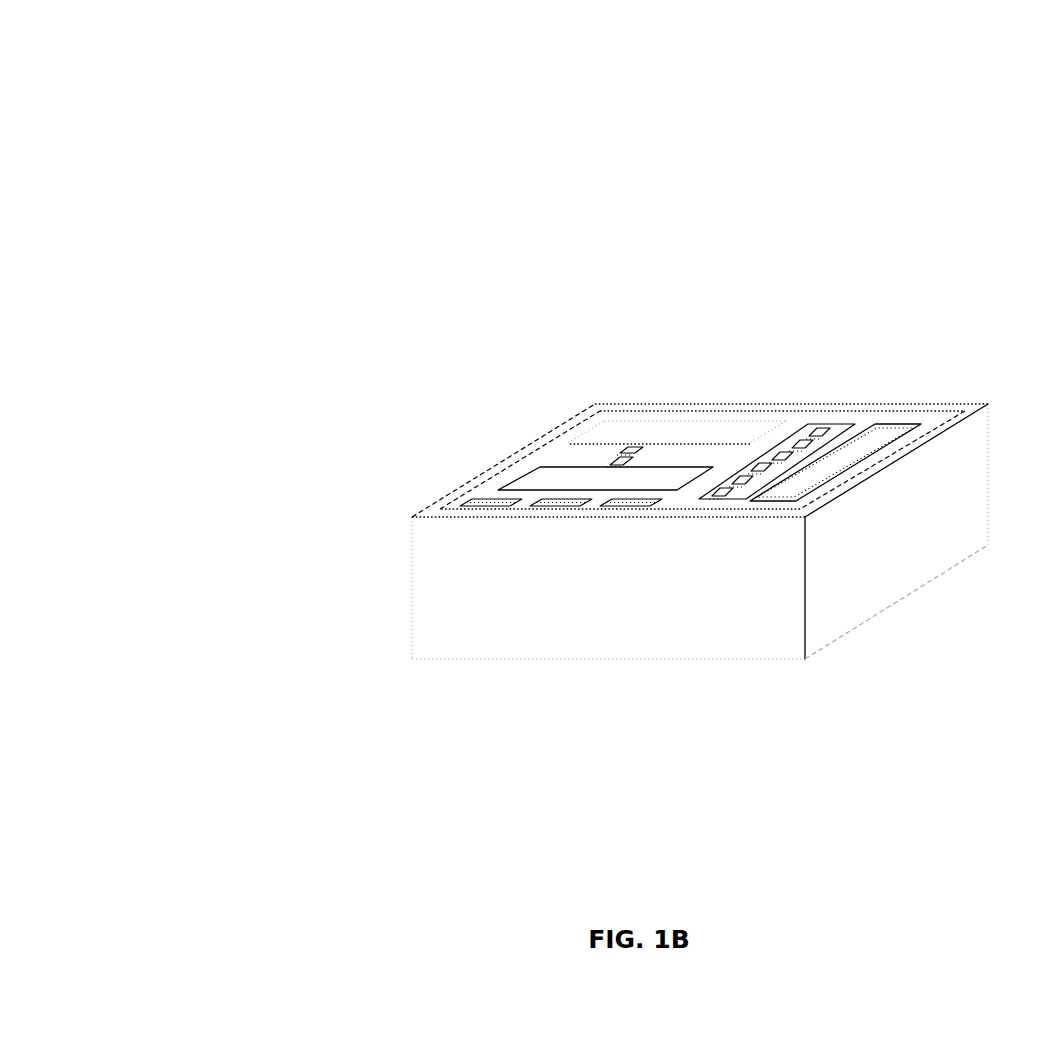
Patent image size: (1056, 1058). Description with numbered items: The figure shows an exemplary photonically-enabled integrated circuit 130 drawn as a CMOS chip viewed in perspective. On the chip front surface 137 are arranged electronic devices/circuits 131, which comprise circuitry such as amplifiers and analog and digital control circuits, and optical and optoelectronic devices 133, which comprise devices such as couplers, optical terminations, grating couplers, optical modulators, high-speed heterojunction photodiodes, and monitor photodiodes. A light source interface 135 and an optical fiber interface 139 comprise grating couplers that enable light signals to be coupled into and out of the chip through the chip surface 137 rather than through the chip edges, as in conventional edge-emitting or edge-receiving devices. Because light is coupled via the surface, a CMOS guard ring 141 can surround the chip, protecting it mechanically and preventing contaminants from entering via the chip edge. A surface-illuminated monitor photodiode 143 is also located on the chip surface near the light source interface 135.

The photonically-enabled integrated circuit 130 is at (250, 128).
The electronic devices/circuits 131 is at (822, 475).
The optical and optoelectronic devices 133 is at (642, 440).
The light source interface 135 is at (641, 448).
The chip front surface 137 is at (736, 413).
The optical fiber interface 139 is at (831, 424).
The CMOS guard ring 141 is at (973, 404).
The surface-illuminated monitor photodiode 143 is at (613, 462).